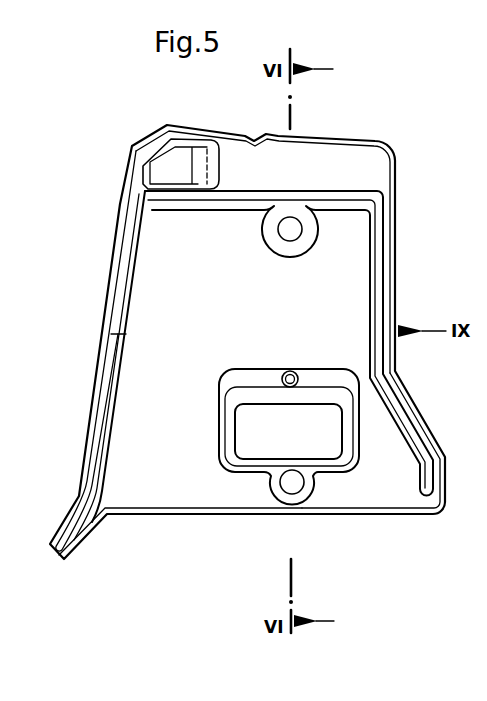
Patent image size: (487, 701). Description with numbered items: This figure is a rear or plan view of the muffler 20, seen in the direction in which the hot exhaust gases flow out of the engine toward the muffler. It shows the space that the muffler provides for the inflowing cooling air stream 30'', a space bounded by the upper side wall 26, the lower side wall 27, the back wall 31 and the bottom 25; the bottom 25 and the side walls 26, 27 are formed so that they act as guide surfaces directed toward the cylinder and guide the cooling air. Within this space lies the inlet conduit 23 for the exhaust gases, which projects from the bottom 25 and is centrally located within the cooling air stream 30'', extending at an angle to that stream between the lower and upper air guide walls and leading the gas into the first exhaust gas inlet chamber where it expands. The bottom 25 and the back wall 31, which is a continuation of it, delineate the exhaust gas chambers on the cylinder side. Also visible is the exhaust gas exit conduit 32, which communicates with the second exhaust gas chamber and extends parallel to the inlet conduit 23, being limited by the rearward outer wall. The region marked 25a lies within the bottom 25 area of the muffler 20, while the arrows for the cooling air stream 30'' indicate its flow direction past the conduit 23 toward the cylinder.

The muffler 20 is at (398, 288).
The inlet conduit 23 is at (253, 468).
The bottom wall 25 is at (340, 265).
The recess portion 25a is at (160, 272).
The upper side wall 26 is at (403, 415).
The lower side wall 27 is at (117, 385).
The cooling air stream 30'' is at (275, 492).
The back wall 31 is at (238, 207).
The exhaust gas exit conduit 32 is at (177, 138).